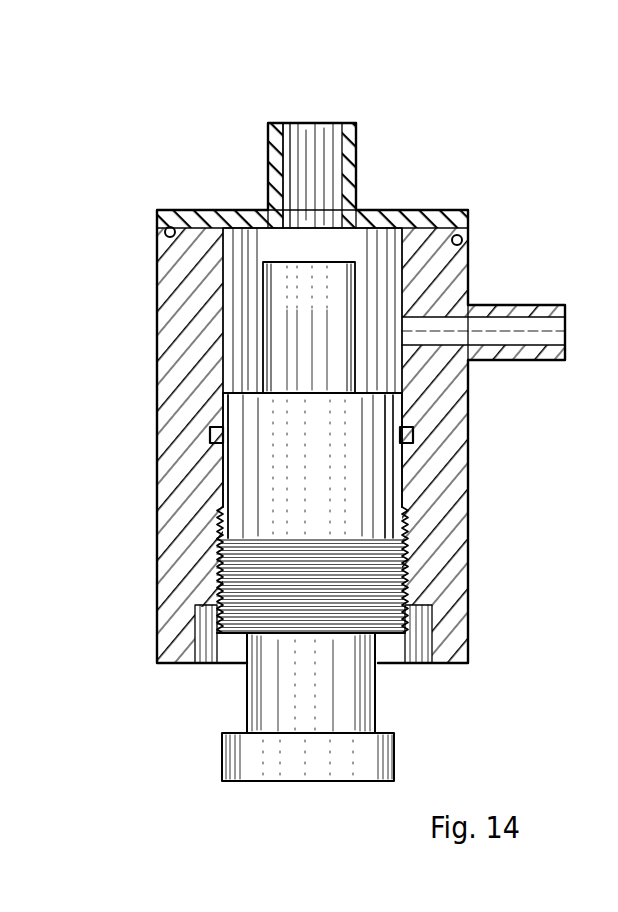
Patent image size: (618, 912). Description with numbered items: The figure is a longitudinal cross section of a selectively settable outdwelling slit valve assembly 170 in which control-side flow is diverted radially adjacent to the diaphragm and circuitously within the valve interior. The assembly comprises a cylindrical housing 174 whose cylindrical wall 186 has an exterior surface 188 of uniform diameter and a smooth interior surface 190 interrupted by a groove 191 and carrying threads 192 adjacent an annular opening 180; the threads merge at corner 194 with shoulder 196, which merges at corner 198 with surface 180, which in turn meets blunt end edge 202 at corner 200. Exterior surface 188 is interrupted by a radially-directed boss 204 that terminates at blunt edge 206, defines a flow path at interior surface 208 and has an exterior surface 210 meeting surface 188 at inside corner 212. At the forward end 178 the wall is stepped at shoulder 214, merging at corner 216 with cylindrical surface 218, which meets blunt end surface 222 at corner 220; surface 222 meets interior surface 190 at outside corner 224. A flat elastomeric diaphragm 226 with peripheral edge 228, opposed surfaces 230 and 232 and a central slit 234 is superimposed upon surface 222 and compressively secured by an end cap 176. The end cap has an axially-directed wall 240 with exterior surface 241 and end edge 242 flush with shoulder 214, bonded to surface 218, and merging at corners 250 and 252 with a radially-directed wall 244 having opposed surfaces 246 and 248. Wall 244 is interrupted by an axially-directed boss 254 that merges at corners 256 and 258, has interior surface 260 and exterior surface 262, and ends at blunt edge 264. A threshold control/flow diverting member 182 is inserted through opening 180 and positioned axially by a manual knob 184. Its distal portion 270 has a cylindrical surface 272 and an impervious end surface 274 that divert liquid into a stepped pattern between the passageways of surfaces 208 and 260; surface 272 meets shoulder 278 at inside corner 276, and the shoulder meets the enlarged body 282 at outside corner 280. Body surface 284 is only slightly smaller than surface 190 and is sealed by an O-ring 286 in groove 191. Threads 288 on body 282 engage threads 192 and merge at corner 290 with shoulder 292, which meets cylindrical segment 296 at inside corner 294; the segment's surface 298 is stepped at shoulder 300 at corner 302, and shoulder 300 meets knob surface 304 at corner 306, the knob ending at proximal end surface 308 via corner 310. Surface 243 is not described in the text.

The slit valve/control assembly 170 is at (412, 174).
The cylindrical housing 174 is at (470, 455).
The end cap 176 is at (438, 208).
The end of housing 178 is at (473, 247).
The annular opening 180 is at (425, 608).
The diaphragm threshold control/flow diverting member 182 is at (425, 400).
The manual knob 184 is at (282, 762).
The cylindrical wall 186 is at (462, 466).
The exterior surface 188 is at (472, 560).
The interior surface 190 is at (172, 240).
The groove 191 is at (213, 432).
The threads 192 is at (402, 510).
The corner 194 is at (232, 520).
The shoulder 196 is at (415, 598).
The corner 198 is at (228, 548).
The annular corner 200 is at (245, 668).
The blunt end edge 202 is at (395, 665).
The radially-directed boss 204 is at (517, 303).
The blunt edge 206 is at (550, 303).
The interior cylindrical surface 208 is at (570, 322).
The exterior cylindrical surface 210 is at (495, 303).
The annular inside corner 212 is at (478, 302).
The shoulder 214 is at (473, 272).
The corner 216 is at (473, 258).
The cylindrical surface 218 is at (157, 224).
The corner 220 is at (151, 228).
The end surface 222 is at (186, 228).
The outside corner 224 is at (242, 208).
The diaphragm 226 is at (290, 225).
The peripheral edge 228 is at (473, 225).
The radially directed surface 230 is at (212, 230).
The radially directed surface 232 is at (197, 228).
The central slit 234 is at (303, 225).
The axially-directed wall 240 is at (157, 214).
The exterior annular surface 241 is at (157, 236).
The end edge surface 242 is at (157, 252).
The plate bottom surface 243 is at (165, 228).
The radially-directed annular wall 244 is at (440, 210).
The radially directed surface 246 is at (410, 210).
The radially directed surface 248 is at (456, 230).
The inside corner 250 is at (473, 236).
The outside corner 252 is at (473, 215).
The axially-directed boss 254 is at (362, 210).
The corner 256 is at (370, 210).
The corner 258 is at (383, 210).
The interior cylindrical surface 260 is at (268, 138).
The exterior cylindrical surface 262 is at (262, 208).
The blunt end edge surface 264 is at (348, 225).
The distal cylindrical portion 270 is at (327, 293).
The cylindrical surface 272 is at (262, 295).
The distal end surface 274 is at (397, 225).
The annular inside corner 276 is at (338, 411).
The shoulder 278 is at (255, 392).
The annular outside corner 280 is at (240, 402).
The cylindrical body 282 is at (327, 443).
The surface 284 is at (218, 447).
The O-ring 286 is at (412, 452).
The threads 288 is at (412, 515).
The annular outside corner 290 is at (420, 632).
The shoulder 292 is at (207, 618).
The inside corner 294 is at (400, 672).
The cylindrical segment 296 is at (327, 671).
The exterior cylindrical surface 298 is at (250, 683).
The shoulder surface 300 is at (246, 718).
The annular inside corner 302 is at (395, 784).
The annular knob surface 304 is at (225, 750).
The outside annular corner 306 is at (235, 735).
The proximal end surface 308 is at (278, 783).
The outside annular corner 310 is at (377, 740).